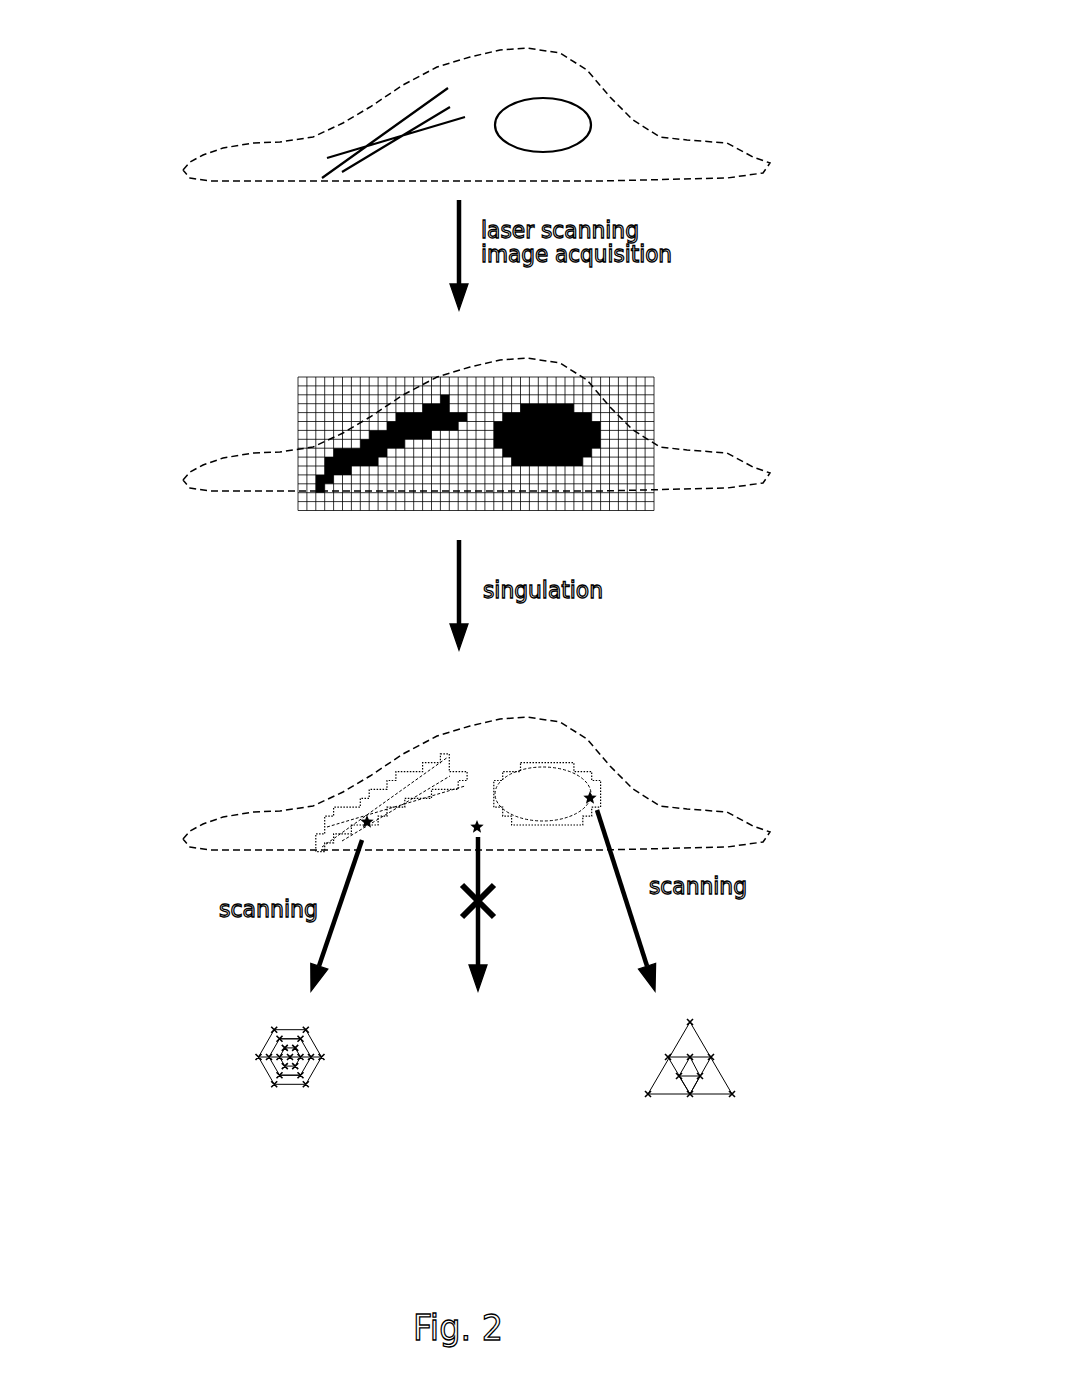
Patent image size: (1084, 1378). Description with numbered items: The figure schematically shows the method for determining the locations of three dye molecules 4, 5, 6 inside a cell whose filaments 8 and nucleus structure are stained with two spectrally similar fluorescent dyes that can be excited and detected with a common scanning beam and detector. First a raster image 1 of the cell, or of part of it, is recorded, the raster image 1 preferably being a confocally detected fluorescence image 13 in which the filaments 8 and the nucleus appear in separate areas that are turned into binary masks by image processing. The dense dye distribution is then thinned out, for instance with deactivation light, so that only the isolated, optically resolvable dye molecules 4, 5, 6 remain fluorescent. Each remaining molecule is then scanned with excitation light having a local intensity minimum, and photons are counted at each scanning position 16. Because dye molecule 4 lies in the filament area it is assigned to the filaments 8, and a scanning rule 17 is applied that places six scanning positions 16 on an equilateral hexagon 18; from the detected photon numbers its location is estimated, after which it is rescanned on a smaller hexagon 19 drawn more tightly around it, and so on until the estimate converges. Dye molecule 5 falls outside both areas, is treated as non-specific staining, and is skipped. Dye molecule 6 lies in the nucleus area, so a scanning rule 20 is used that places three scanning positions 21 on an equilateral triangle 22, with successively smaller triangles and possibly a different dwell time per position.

The raster image 1 is at (518, 400).
The dye molecule 4 is at (309, 771).
The dye molecule 5 is at (449, 752).
The dye molecule 6 is at (669, 758).
The filaments 8 is at (366, 107).
The fluorescence image 13 is at (638, 388).
The scanning position 16 is at (306, 1084).
The scanning rule 17 is at (279, 1068).
The equilateral hexagon 18 is at (268, 1070).
The smaller hexagon 19 is at (290, 1075).
The scanning rule 20 is at (741, 1065).
The scanning position 21 is at (653, 1101).
The equilateral triangle 22 is at (725, 1070).